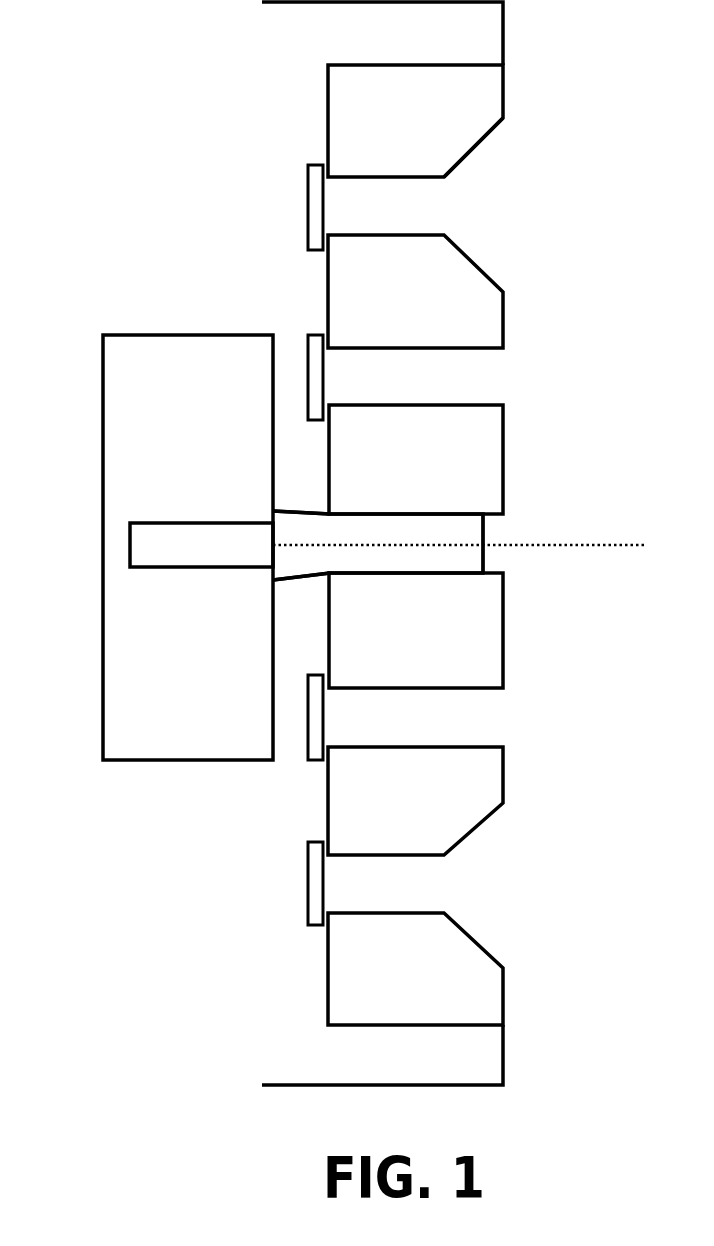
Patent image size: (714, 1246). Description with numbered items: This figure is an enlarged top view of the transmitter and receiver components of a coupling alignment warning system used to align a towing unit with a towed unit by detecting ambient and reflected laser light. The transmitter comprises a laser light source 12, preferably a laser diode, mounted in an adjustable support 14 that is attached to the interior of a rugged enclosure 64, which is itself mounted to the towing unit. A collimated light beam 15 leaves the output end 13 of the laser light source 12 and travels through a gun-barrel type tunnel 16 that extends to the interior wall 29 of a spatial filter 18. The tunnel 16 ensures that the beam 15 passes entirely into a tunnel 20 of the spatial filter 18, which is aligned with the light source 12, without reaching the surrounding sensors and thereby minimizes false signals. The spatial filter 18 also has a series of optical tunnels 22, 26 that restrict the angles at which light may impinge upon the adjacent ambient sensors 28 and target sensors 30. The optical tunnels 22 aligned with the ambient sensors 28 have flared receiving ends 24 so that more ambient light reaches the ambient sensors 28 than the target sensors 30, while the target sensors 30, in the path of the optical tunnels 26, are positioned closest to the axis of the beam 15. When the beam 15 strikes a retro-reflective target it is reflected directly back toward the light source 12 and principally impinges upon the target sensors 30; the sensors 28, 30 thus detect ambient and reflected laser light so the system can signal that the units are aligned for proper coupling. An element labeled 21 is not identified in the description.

The laser light source 12 is at (155, 558).
The output end 13 is at (267, 545).
The adjustable support 14 is at (112, 745).
The collimated light beam 15 is at (613, 545).
The gun-barrel type tunnel 16 is at (295, 510).
The spatial filter 18 is at (478, 93).
The tunnel 20 is at (497, 535).
The second electrode 21 is at (463, 842).
The optical tunnels 22 is at (444, 207).
The flared receiving ends 24 is at (480, 148).
The optical tunnels 26 is at (445, 377).
The ambient sensors 28 is at (308, 179).
The interior wall 29 is at (328, 599).
The target sensors 30 is at (306, 350).
The rugged enclosure 64 is at (465, 32).